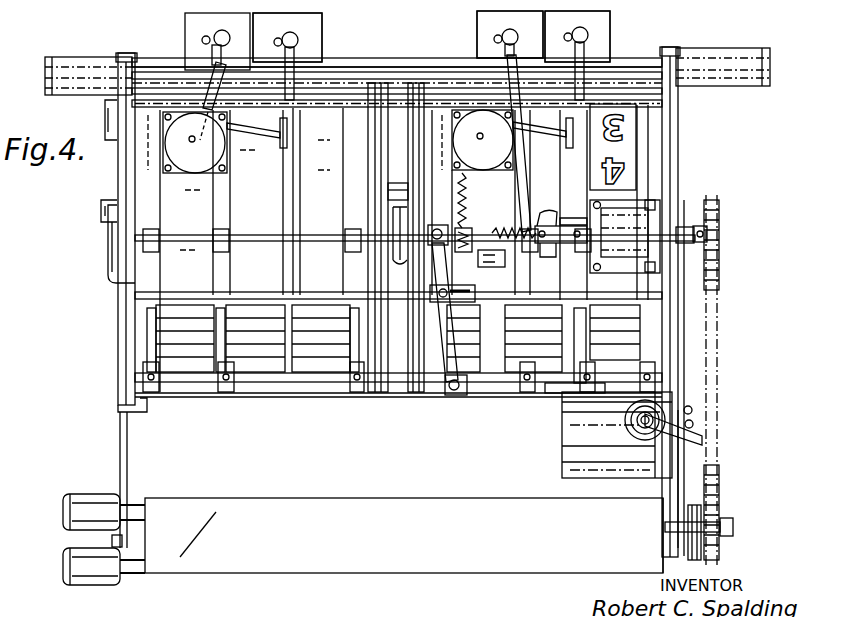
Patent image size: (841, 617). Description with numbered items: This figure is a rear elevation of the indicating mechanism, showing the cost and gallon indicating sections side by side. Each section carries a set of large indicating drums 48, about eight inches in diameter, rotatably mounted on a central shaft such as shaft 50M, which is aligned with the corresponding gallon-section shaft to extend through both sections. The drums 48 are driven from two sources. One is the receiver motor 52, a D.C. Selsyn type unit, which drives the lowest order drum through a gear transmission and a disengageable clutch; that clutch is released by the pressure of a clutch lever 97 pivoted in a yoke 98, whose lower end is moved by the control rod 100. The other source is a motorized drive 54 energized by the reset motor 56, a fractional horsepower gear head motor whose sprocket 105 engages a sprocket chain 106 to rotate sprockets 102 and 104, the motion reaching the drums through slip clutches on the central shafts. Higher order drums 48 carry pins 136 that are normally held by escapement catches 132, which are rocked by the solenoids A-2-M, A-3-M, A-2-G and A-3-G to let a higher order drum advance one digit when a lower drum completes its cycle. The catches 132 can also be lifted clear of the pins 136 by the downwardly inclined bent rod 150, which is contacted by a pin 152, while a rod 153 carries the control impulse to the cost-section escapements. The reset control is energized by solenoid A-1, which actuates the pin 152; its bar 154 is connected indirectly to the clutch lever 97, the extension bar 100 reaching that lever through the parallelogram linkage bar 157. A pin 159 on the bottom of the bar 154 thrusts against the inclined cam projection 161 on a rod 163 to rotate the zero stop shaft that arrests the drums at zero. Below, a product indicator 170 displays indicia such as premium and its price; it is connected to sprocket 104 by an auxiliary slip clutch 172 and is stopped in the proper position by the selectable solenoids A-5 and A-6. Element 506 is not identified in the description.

The receiver motor 52 is at (170, 2).
The solenoid A-2-M is at (192, 33).
The solenoid A-3-M is at (300, 22).
The solenoid A-2-G is at (488, 20).
The solenoid A-3-G is at (600, 6).
The escapement catch 132 is at (292, 56).
The rod 153 is at (434, 64).
The pin 136 is at (283, 185).
The bent rod 150 is at (514, 182).
The pin 152 is at (476, 200).
The pin 159 is at (452, 227).
The bar 154 is at (520, 247).
The inclined cam projection 161 is at (488, 270).
The parallelogram linkage bar 157 is at (433, 386).
The rod 163 is at (458, 388).
The control rod 100 is at (302, 292).
The indicating drums 48 is at (195, 370).
The solenoid A-1 is at (632, 268).
The rod 506 is at (684, 202).
The sprocket chain 106 is at (727, 339).
The motorized drive 54 is at (729, 272).
The sprocket 102 is at (720, 230).
The reset motor 56 is at (592, 463).
The sprocket 105 is at (702, 432).
The sprocket 104 is at (722, 522).
The solenoid A-5 is at (112, 478).
The solenoid A-6 is at (90, 565).
The product indicator 170 is at (337, 581).
The auxiliary slip clutch 172 is at (662, 572).
The yoke 98 is at (104, 196).
The clutch lever 97 is at (102, 212).
The central shaft 50M is at (140, 233).